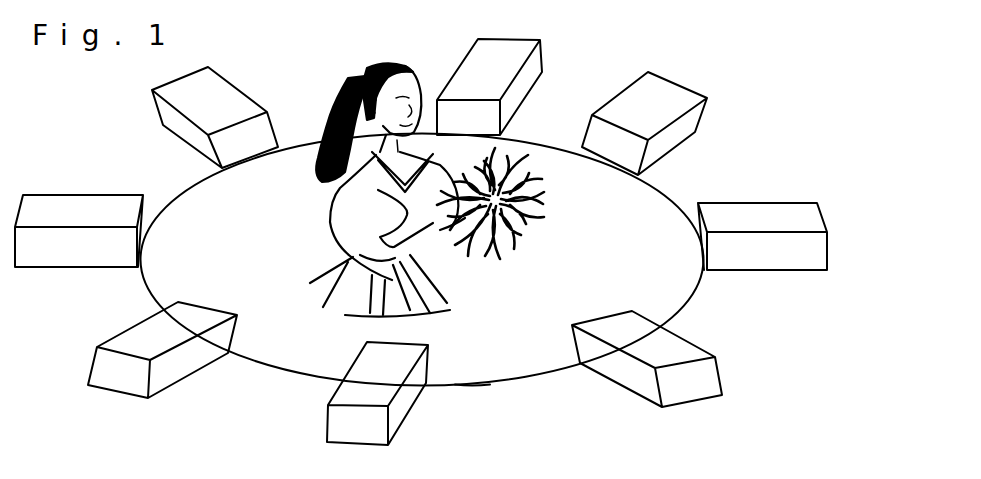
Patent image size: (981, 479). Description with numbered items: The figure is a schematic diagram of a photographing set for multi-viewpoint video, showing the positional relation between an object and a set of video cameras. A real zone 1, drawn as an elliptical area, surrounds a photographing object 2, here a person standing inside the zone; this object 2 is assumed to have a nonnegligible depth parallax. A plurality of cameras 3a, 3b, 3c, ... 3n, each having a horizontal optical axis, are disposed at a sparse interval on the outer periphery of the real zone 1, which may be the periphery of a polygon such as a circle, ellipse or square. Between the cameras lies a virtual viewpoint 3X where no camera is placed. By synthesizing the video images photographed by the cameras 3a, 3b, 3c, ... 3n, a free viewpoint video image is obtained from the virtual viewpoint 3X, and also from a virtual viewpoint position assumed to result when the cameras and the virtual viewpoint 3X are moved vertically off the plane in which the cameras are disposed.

The real zone 1 is at (663, 280).
The photographing object 2 is at (352, 49).
The camera 3n is at (532, 95).
The camera 3a is at (668, 152).
The camera 3b is at (760, 275).
The camera 3c is at (617, 383).
The virtual viewpoint 3X is at (477, 397).